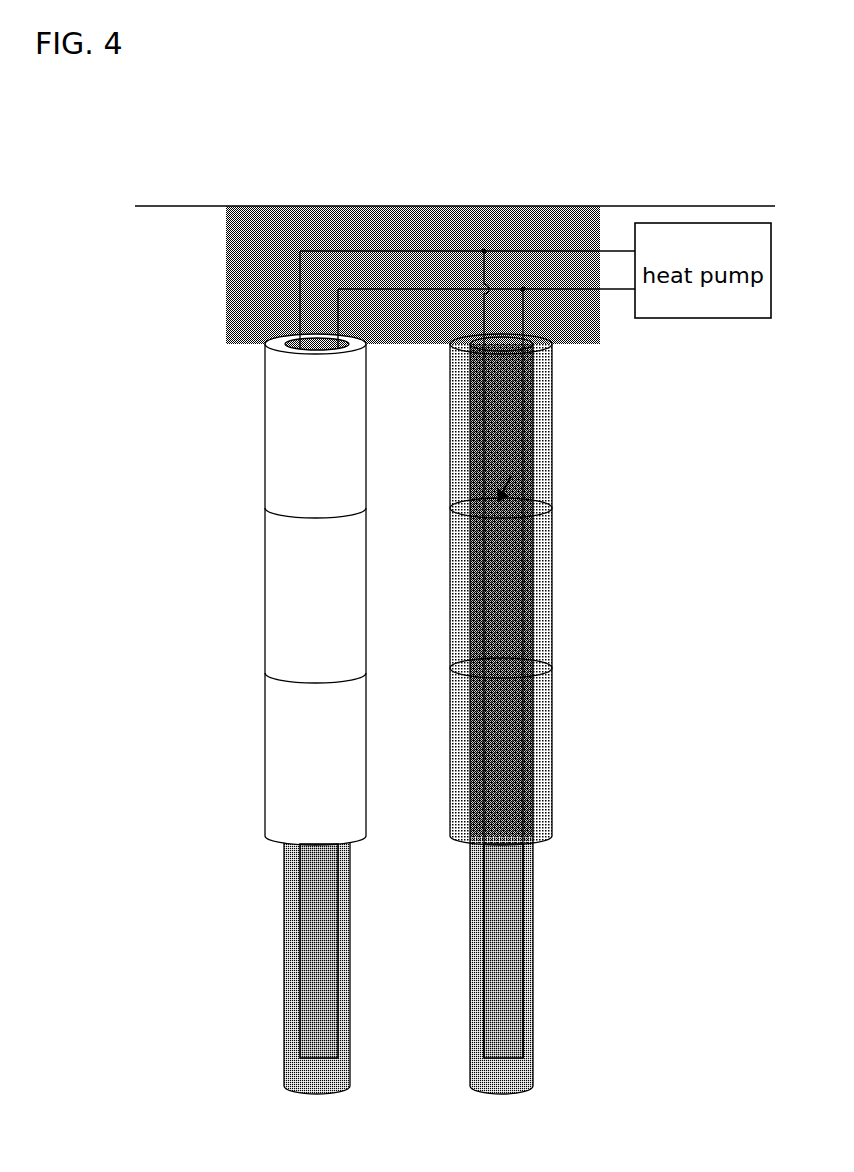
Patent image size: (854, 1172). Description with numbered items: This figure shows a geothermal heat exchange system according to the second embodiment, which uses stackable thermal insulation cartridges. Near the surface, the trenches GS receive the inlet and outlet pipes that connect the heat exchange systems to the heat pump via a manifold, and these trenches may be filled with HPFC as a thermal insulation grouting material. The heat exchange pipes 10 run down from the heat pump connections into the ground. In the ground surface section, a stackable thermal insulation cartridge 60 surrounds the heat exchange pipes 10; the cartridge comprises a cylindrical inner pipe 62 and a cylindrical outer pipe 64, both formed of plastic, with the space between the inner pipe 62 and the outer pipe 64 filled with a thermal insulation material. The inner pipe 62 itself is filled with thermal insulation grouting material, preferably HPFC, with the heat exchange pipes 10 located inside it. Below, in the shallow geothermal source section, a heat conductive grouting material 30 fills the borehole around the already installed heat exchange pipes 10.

The trenches GS is at (218, 262).
The heat exchange pipes 10 is at (292, 978).
The heat conductive grouting material 30 is at (527, 955).
The stackable thermal insulation cartridge 60 is at (245, 660).
The cylindrical inner pipe 62 is at (525, 455).
The cylindrical outer pipe 64 is at (558, 560).